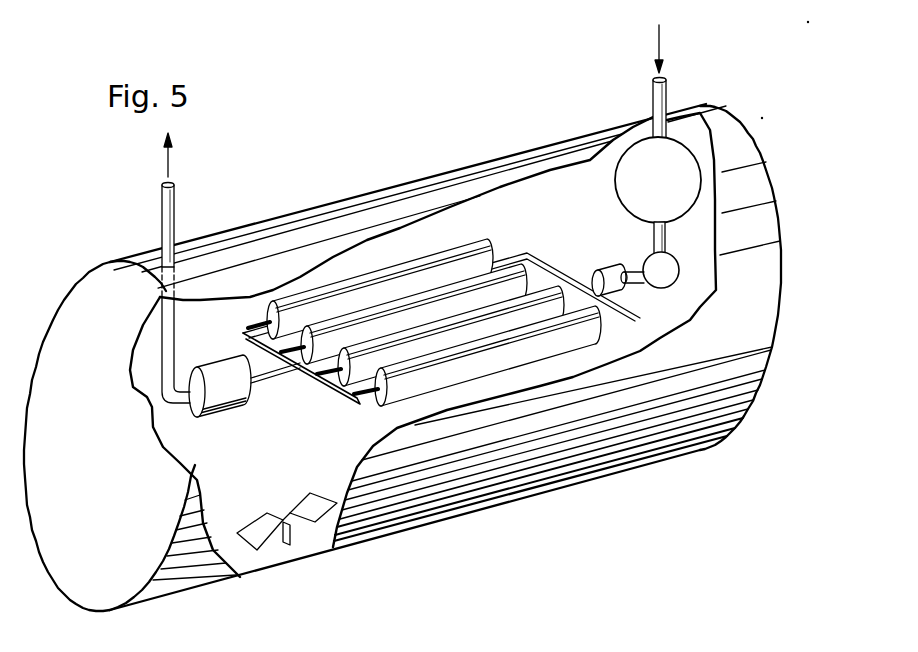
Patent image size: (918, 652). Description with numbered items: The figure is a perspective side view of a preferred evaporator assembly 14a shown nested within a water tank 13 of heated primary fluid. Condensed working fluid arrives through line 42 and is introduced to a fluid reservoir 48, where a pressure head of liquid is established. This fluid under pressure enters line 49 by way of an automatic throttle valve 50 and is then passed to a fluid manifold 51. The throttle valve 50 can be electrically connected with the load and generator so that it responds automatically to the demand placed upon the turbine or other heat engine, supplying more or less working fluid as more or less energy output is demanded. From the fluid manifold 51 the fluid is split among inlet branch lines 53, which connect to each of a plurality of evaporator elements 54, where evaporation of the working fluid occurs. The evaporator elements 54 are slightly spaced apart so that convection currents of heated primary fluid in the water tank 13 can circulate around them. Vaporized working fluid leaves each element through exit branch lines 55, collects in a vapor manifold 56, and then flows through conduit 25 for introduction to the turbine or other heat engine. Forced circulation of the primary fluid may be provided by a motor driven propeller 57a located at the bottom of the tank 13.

The water tank 13 is at (583, 434).
The evaporator assembly 14a is at (487, 215).
The conduit 25 is at (176, 207).
The line 42 is at (652, 97).
The fluid reservoir 48 is at (618, 186).
The line 49 is at (640, 285).
The automatic throttle valve 50 is at (673, 258).
The fluid manifold 51 is at (612, 265).
The inlet branch lines 53 is at (543, 257).
The evaporator elements 54 is at (500, 347).
The exit branch lines 55 is at (337, 396).
The vapor manifold 56 is at (221, 405).
The motor driven propeller 57a is at (280, 518).